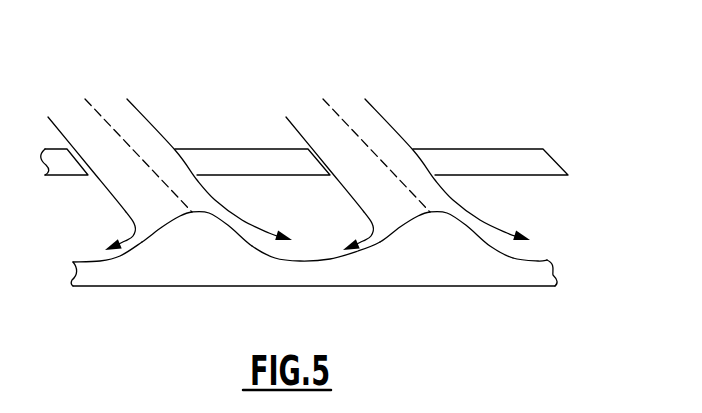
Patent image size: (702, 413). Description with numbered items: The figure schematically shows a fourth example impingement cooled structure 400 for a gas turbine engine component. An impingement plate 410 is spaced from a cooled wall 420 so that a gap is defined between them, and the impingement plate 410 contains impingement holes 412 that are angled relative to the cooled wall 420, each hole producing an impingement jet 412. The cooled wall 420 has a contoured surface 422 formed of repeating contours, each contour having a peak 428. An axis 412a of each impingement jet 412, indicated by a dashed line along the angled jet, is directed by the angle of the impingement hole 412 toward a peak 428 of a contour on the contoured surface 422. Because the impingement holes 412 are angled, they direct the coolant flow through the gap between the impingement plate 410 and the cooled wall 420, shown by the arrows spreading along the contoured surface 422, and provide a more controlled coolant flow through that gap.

The impingement cooled structure 400 is at (479, 63).
The impingement plate 410 is at (256, 158).
The impingement hole 412 is at (174, 140).
The axis 412a is at (110, 115).
The cooled wall 420 is at (540, 277).
The contoured surface 422 is at (547, 258).
The peak 428 is at (193, 211).